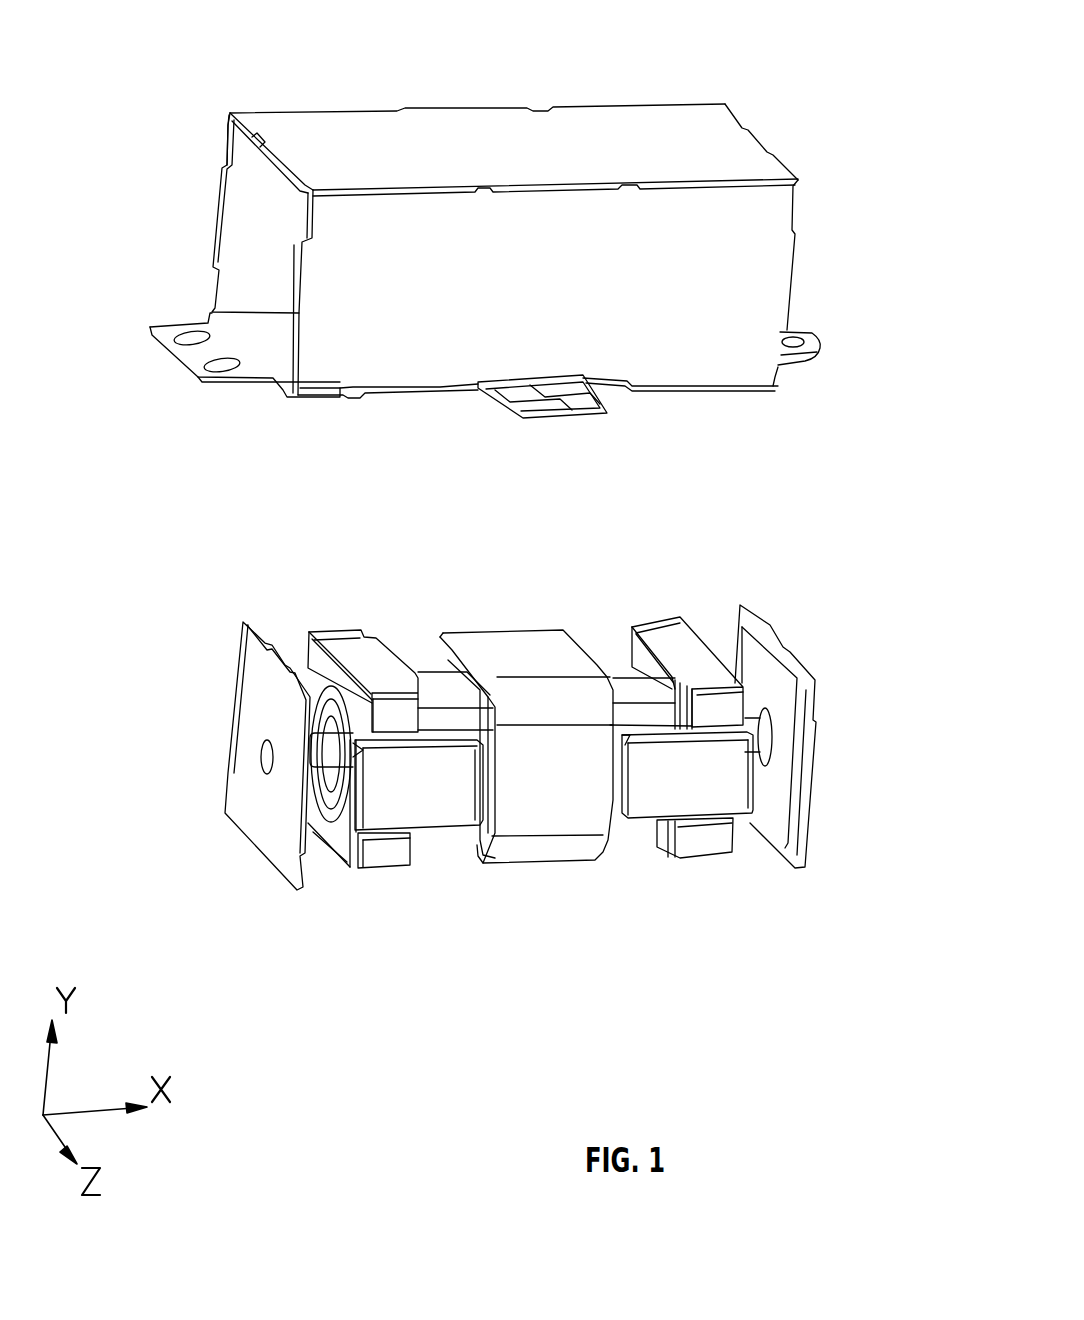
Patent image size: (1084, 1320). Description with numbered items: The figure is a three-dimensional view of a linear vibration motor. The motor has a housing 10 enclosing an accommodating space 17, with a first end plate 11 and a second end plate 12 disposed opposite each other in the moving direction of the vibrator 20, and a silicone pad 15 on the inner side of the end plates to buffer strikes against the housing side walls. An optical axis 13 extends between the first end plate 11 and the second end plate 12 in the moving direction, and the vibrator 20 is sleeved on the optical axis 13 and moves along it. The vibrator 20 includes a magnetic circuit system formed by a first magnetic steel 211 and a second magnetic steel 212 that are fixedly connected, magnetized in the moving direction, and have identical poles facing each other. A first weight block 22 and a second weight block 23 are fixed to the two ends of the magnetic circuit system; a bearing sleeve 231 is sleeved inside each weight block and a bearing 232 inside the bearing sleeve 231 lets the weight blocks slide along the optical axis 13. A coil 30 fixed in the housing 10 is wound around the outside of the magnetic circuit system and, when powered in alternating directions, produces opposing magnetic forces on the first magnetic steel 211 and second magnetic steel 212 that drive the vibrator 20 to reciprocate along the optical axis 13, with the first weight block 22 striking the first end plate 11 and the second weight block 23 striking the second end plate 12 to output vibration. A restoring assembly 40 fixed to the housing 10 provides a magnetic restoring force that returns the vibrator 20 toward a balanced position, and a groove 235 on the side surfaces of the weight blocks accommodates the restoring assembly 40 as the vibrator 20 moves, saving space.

The housing 10 is at (910, 220).
The accommodating space 17 is at (228, 140).
The first end plate 11 is at (275, 681).
The second end plate 12 is at (772, 642).
The optical axis 13 is at (320, 752).
The silicone pad 15 is at (780, 758).
The vibrator 20 is at (524, 726).
The first weight block 22 is at (387, 655).
The first magnetic steel 211 is at (447, 690).
The second magnetic steel 212 is at (627, 690).
The second weight block 23 is at (688, 660).
The bearing sleeve 231 is at (317, 815).
The bearing 232 is at (351, 862).
The groove 235 is at (690, 725).
The coil 30 is at (585, 800).
The restoring assembly 40 is at (417, 813).